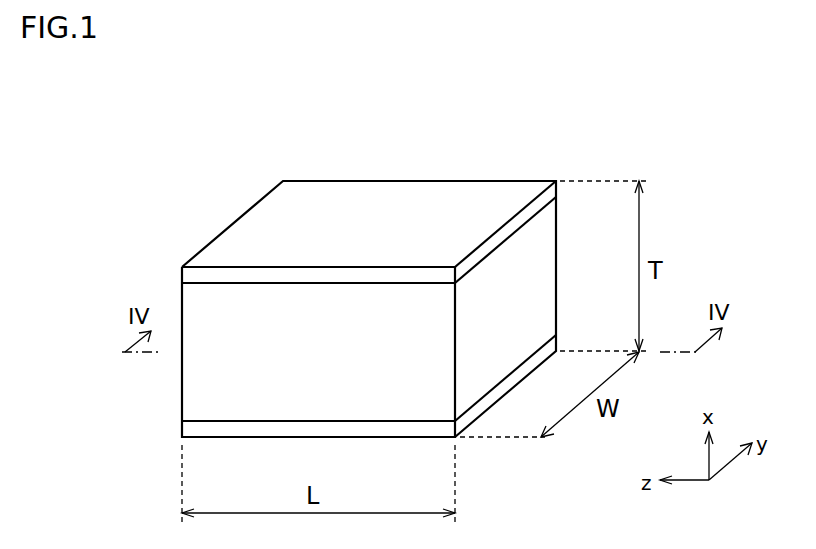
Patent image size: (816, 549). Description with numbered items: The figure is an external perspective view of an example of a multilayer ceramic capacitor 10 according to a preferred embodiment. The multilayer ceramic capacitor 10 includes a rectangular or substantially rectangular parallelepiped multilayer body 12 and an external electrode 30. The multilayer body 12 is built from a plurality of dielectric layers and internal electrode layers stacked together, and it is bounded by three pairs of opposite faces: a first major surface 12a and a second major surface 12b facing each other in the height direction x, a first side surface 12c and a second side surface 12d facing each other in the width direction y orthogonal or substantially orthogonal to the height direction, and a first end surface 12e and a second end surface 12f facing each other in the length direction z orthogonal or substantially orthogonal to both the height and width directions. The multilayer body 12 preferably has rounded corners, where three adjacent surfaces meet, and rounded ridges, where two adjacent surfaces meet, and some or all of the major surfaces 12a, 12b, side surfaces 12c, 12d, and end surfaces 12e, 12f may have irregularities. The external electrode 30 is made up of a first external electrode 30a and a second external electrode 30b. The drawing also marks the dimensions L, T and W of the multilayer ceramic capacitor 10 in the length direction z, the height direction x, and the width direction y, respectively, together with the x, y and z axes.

The multilayer ceramic capacitor 10 is at (162, 192).
The multilayer body 12 is at (178, 370).
The first major surface 12a is at (238, 283).
The second major surface 12b is at (381, 422).
The first side surface 12c is at (206, 396).
The second side surface 12d is at (397, 208).
The first end surface 12e is at (182, 298).
The second end surface 12f is at (528, 255).
The external electrode 30 is at (318, 352).
The first external electrode 30a is at (470, 204).
The second external electrode 30b is at (200, 429).